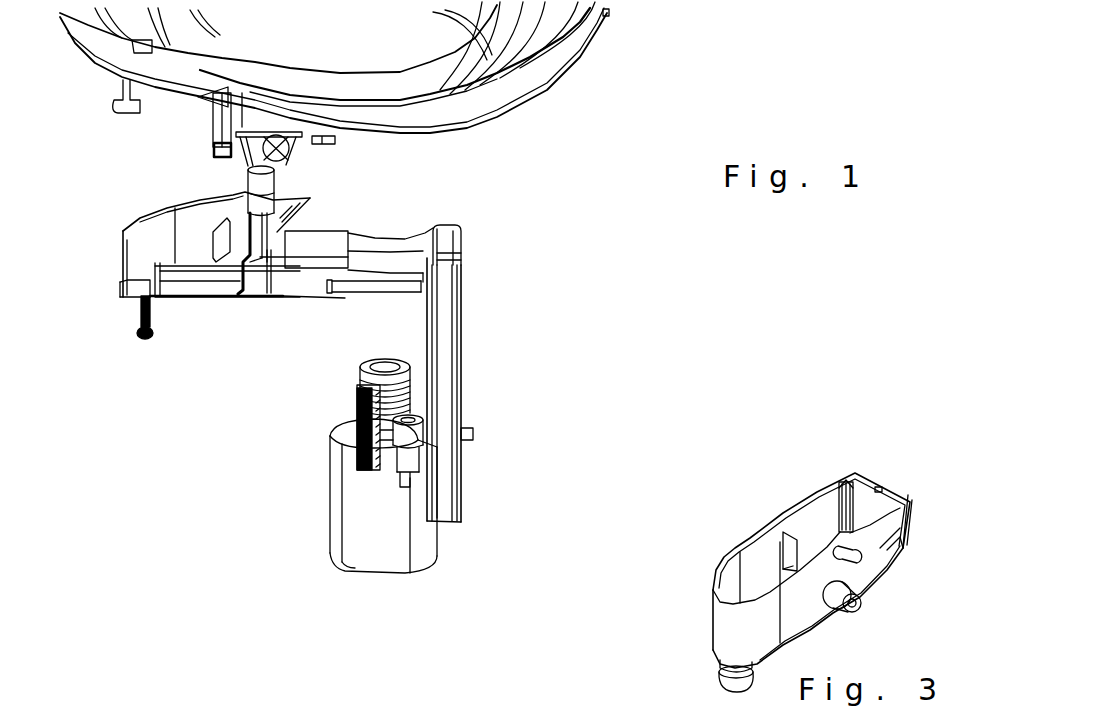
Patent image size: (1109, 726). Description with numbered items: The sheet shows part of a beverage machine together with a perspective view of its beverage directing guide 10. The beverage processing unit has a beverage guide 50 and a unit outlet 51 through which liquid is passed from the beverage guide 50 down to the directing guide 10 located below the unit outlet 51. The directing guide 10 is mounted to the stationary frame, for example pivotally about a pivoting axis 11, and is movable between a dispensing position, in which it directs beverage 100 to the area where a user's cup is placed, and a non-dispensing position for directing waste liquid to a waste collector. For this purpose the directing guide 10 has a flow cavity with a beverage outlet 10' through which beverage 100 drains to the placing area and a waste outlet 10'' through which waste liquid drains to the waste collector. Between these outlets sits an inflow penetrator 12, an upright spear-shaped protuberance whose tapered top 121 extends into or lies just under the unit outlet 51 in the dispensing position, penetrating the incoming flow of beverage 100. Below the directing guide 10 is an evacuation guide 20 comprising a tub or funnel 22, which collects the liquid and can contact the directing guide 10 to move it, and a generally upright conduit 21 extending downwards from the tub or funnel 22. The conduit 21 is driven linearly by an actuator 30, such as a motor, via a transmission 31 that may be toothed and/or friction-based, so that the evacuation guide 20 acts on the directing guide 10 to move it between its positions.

In FIG. 1, the beverage directing guide 10 is at (212, 231).
In FIG. 3, the beverage directing guide 10 is at (801, 570).
In FIG. 1, the beverage outlet 10' is at (98, 318).
In FIG. 3, the beverage outlet 10' is at (677, 660).
In FIG. 3, the waste outlet 10'' is at (908, 492).
In FIG. 3, the pivoting axis 11 is at (860, 609).
In FIG. 1, the inflow penetrator 12 is at (250, 230).
In FIG. 3, the inflow penetrator 12 is at (840, 522).
In FIG. 3, the tapered top 121 is at (847, 496).
In FIG. 1, the evacuation guide 20 is at (463, 242).
In FIG. 1, the conduit 21 is at (462, 373).
In FIG. 1, the tub or funnel 22 is at (377, 250).
In FIG. 1, the actuator 30 is at (348, 510).
In FIG. 1, the transmission 31 is at (357, 413).
In FIG. 1, the beverage guide 50 is at (565, 59).
In FIG. 1, the unit outlet 51 is at (257, 184).
In FIG. 1, the beverage 100 is at (146, 337).